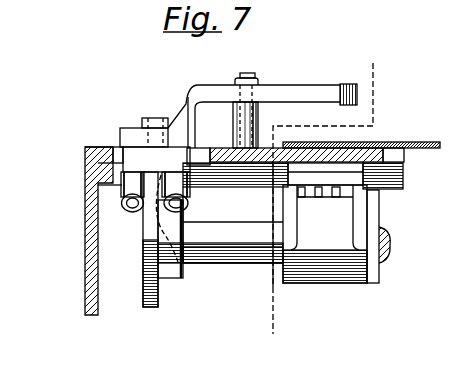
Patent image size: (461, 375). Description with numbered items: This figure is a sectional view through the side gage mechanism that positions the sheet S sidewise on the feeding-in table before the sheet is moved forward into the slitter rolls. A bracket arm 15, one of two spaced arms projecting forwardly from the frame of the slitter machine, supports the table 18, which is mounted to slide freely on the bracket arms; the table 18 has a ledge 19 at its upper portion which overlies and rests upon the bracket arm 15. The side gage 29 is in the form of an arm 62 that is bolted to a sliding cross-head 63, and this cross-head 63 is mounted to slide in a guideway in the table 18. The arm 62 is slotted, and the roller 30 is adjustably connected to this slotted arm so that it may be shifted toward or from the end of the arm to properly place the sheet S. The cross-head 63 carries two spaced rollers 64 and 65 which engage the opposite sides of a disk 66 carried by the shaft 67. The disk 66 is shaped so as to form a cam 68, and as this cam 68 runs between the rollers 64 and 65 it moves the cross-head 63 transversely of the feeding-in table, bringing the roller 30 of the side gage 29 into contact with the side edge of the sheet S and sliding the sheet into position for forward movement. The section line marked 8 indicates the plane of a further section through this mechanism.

The belt wheel 8 is at (388, 63).
The bracket arm 15 is at (86, 257).
The table 18 is at (100, 146).
The ledge 19 is at (86, 156).
The side gage 29 is at (276, 100).
The roller 30 is at (253, 128).
The arm 62 is at (189, 96).
The sliding cross-head 63 is at (138, 160).
The roller 64 is at (123, 203).
The roller 65 is at (190, 195).
The disk 66 is at (148, 268).
The shaft 67 is at (257, 252).
The cam 68 is at (178, 262).
The sheet S is at (410, 146).